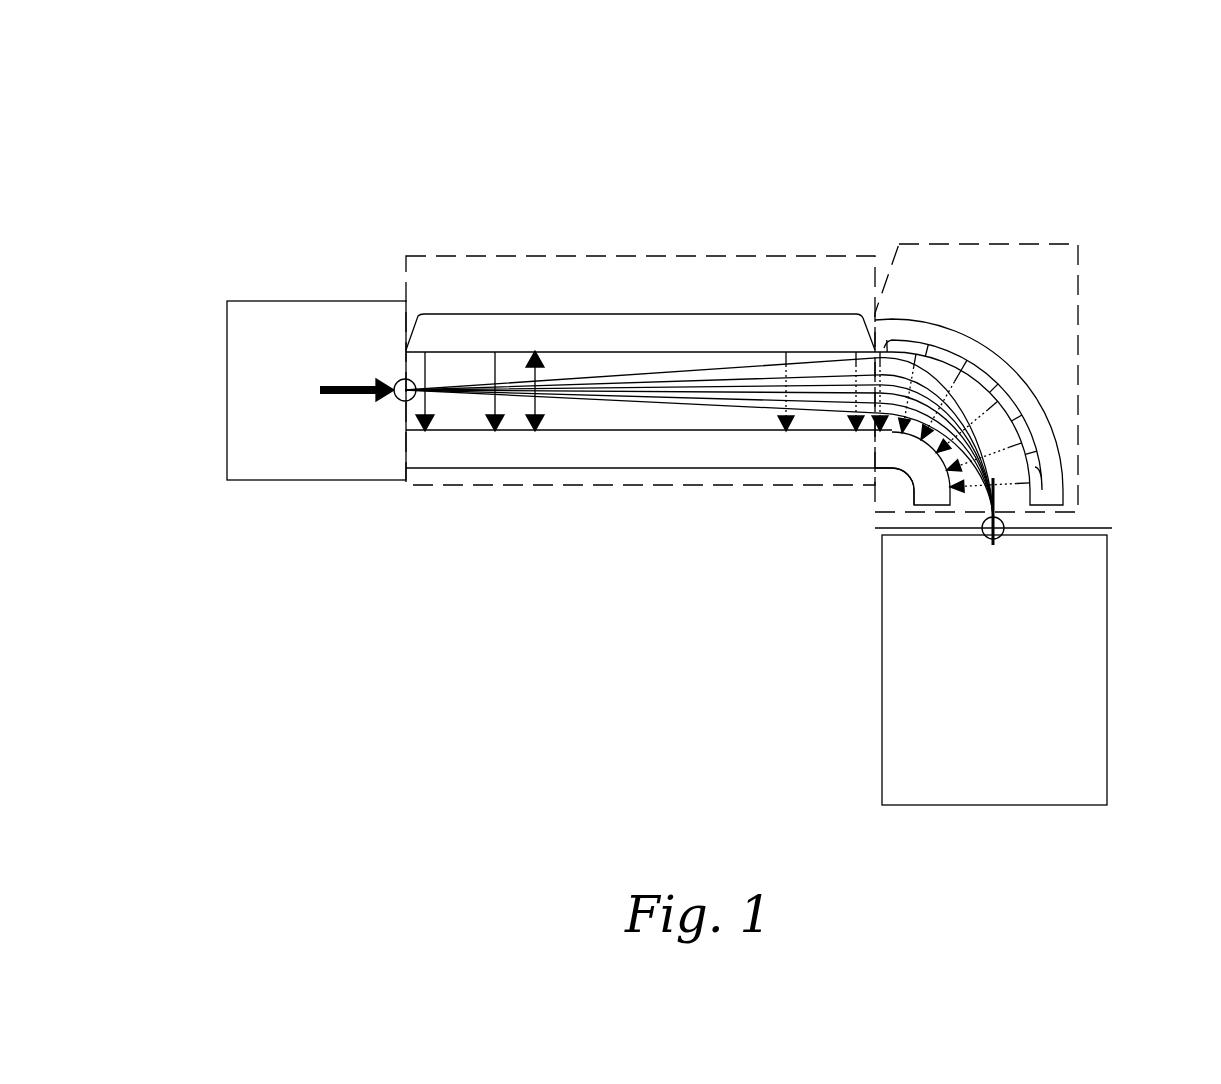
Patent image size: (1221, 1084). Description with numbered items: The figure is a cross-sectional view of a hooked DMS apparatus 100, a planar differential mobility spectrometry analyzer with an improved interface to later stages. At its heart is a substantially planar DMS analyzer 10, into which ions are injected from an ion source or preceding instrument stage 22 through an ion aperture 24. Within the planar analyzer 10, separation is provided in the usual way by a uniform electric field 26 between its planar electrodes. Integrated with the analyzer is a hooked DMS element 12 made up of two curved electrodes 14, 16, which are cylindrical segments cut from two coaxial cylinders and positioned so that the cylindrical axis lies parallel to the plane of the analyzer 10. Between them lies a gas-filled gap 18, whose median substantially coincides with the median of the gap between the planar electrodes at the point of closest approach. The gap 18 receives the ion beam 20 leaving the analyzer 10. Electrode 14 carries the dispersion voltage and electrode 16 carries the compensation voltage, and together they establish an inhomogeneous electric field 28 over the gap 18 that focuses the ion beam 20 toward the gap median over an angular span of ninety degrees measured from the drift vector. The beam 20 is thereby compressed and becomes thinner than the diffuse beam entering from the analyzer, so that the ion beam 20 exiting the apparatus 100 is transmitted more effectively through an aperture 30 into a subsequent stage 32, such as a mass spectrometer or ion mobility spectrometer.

The DMS apparatus 100 is at (1086, 125).
The planar DMS analyzer 10 is at (488, 255).
The hooked DMS element 12 is at (980, 243).
The curved electrode 14 is at (900, 465).
The curved electrode 16 is at (902, 328).
The gap 18 is at (537, 412).
The ion beam 20 is at (773, 403).
The ion source or preceding instrument stage 22 is at (282, 345).
The ion aperture 24 is at (398, 398).
The uniform electric field 26 is at (647, 300).
The inhomogeneous electric field 28 is at (989, 373).
The aperture 30 is at (1004, 524).
The subsequent stage 32 is at (1013, 688).